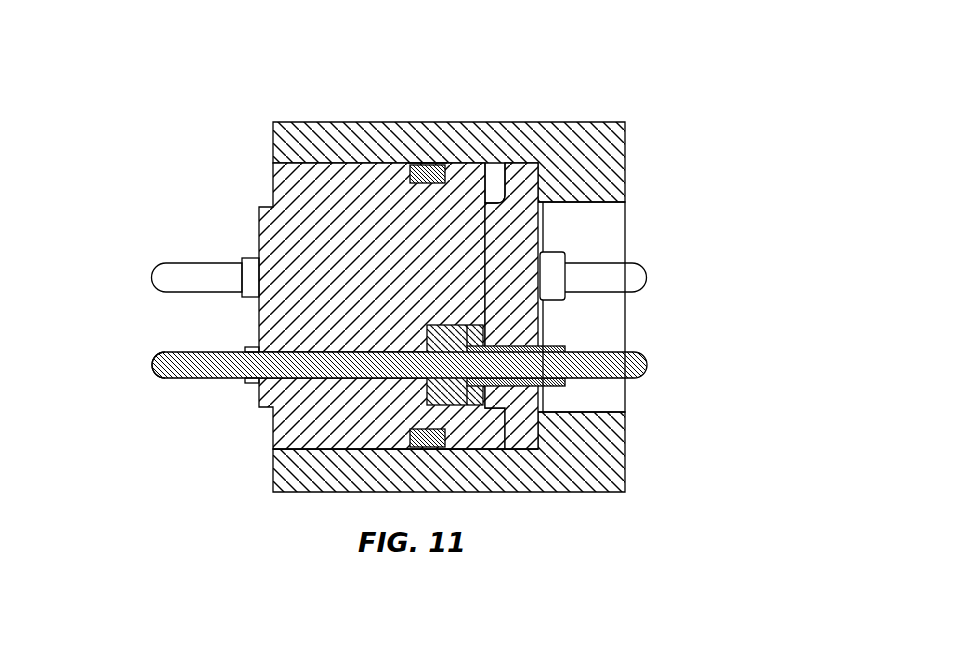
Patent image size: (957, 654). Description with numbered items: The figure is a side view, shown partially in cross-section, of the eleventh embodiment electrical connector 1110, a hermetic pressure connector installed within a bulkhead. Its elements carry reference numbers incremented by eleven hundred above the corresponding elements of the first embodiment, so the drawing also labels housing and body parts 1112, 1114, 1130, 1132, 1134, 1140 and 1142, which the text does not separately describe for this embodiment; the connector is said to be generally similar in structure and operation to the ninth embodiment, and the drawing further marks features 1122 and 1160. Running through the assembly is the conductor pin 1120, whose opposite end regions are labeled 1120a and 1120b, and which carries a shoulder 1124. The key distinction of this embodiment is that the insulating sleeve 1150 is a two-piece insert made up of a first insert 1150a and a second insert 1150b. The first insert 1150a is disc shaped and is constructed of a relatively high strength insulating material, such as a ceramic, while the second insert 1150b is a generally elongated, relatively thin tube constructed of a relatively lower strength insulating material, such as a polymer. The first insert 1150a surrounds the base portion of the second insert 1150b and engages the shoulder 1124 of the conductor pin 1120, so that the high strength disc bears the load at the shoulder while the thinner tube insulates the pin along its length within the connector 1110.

The electrical connector 1110 is at (271, 437).
The top plate 1112 is at (425, 122).
The seam between body and bottom plate 1114 is at (532, 452).
The conductor pin 1120 is at (607, 353).
The rod first end 1120a is at (152, 367).
The rod threaded portion 1120b is at (647, 363).
The piston block 1122 is at (292, 353).
The shoulder 1124 is at (425, 418).
The upper body portion 1130 is at (313, 267).
The seal ring 1132 is at (367, 130).
The seal groove 1134 is at (432, 163).
The right body portion 1140 is at (540, 183).
The lower threaded sleeve 1142 is at (560, 388).
The insulating sleeve 1150 is at (600, 432).
The first insert 1150a is at (595, 257).
The second insert 1150b is at (567, 345).
The channel 1160 is at (512, 165).